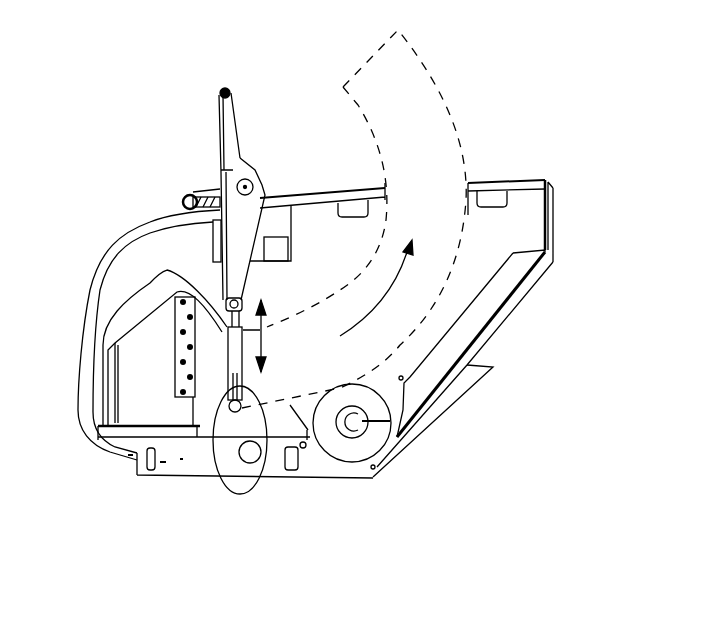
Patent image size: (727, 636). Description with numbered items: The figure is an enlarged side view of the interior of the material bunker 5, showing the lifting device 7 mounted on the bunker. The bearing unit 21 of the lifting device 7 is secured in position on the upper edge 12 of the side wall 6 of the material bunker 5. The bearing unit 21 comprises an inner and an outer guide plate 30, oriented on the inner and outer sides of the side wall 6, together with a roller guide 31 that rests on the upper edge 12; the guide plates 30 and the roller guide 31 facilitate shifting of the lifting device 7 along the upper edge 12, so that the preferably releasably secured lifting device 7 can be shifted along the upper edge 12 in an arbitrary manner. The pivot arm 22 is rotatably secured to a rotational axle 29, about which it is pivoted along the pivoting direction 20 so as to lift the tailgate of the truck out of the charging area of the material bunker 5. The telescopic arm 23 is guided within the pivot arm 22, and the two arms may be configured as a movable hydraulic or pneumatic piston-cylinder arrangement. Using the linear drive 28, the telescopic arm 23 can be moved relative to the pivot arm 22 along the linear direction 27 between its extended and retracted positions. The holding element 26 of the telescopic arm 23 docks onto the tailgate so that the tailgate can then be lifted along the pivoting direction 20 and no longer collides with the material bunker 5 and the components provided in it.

The lifting device 7 is at (250, 78).
The pivot arm 22 is at (220, 131).
The rotational axle 29 is at (249, 180).
The bearing unit 21 is at (274, 225).
The upper edge 12 is at (334, 192).
The material bunker 5 is at (512, 175).
The side wall 6 is at (499, 247).
The roller guide 31 is at (188, 195).
The guide plate 30 is at (217, 240).
The linear drive 28 is at (280, 252).
The linear direction 27 is at (258, 341).
The pivoting direction 20 is at (383, 300).
The telescopic arm 23 is at (222, 488).
The holding element 26 is at (256, 488).